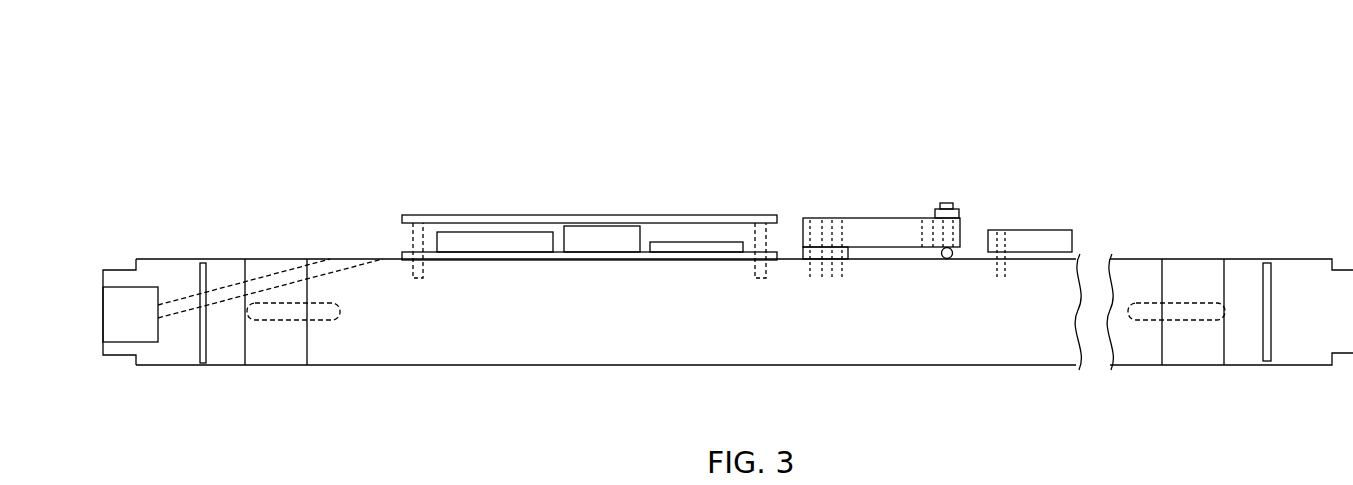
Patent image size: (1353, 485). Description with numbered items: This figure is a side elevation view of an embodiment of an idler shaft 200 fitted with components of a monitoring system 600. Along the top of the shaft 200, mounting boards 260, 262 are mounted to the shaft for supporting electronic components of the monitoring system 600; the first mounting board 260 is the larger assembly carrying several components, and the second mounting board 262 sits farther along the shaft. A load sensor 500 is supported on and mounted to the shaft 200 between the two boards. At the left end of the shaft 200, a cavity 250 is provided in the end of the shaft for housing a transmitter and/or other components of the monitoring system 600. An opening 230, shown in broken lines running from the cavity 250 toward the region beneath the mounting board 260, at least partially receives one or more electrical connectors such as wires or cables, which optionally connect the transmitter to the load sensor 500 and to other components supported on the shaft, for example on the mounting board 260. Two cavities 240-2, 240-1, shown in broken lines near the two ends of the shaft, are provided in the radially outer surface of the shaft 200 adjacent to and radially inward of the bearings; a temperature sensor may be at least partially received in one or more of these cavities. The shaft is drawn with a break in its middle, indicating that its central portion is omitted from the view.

The shaft 200 is at (138, 135).
The monitoring system 600 is at (350, 170).
The cavity 250 is at (126, 304).
The opening 230 is at (270, 278).
The cavity 240-2 is at (293, 318).
The cavity 240-1 is at (1175, 320).
The mounting board 260 is at (523, 215).
The load sensor 500 is at (885, 214).
The mounting board 262 is at (1037, 230).